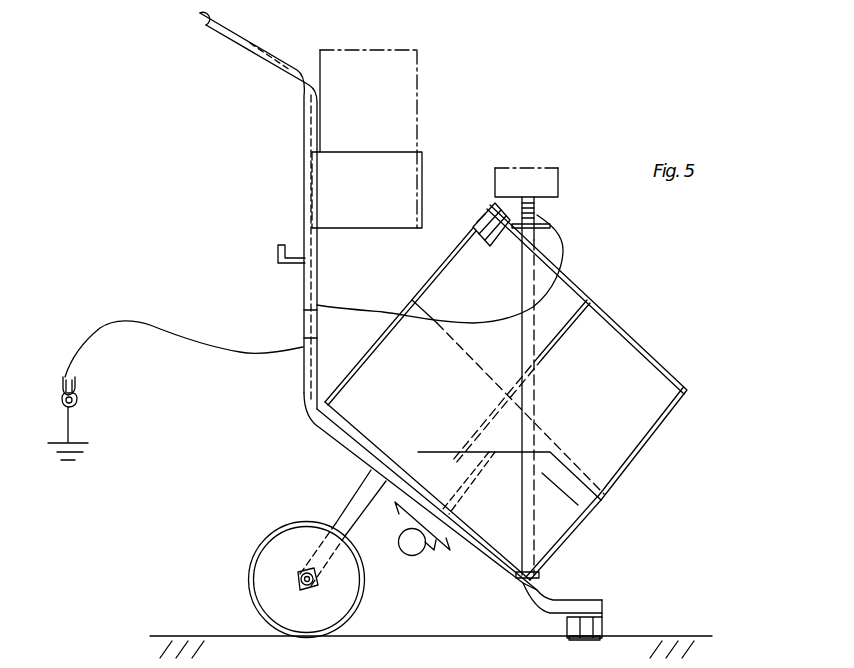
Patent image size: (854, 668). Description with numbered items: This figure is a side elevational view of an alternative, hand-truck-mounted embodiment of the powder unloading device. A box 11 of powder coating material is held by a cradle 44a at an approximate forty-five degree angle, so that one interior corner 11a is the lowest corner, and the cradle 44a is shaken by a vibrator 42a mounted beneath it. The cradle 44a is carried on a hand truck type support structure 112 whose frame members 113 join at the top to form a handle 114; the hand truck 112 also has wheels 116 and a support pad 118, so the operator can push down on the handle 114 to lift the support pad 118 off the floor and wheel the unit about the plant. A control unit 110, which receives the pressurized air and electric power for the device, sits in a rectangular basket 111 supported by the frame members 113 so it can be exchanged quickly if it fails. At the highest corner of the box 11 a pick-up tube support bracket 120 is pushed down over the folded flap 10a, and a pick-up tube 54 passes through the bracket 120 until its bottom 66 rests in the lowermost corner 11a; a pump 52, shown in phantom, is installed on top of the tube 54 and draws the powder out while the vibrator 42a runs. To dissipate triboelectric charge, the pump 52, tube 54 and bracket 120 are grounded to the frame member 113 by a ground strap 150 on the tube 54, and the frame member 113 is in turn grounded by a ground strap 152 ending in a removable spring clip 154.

The flap 10a is at (572, 302).
The box 11 is at (688, 388).
The interior corner 11a is at (510, 590).
The vibrator 42a is at (407, 556).
The cradle 44a is at (562, 528).
The pump 52 is at (557, 170).
The pick-up tube 54 is at (528, 388).
The bottom of the tube 66 is at (533, 553).
The control unit 110 is at (410, 52).
The rectangular basket 111 is at (397, 165).
The hand truck type support structure 112 is at (338, 478).
The frame members 113 is at (303, 282).
The handle 114 is at (202, 25).
The wheels 116 is at (250, 590).
The support pad 118 is at (603, 630).
The pick-up tube support bracket 120 is at (472, 214).
The ground strap 150 is at (437, 323).
The ground strap 152 is at (137, 320).
The removable spring clip 154 is at (77, 398).